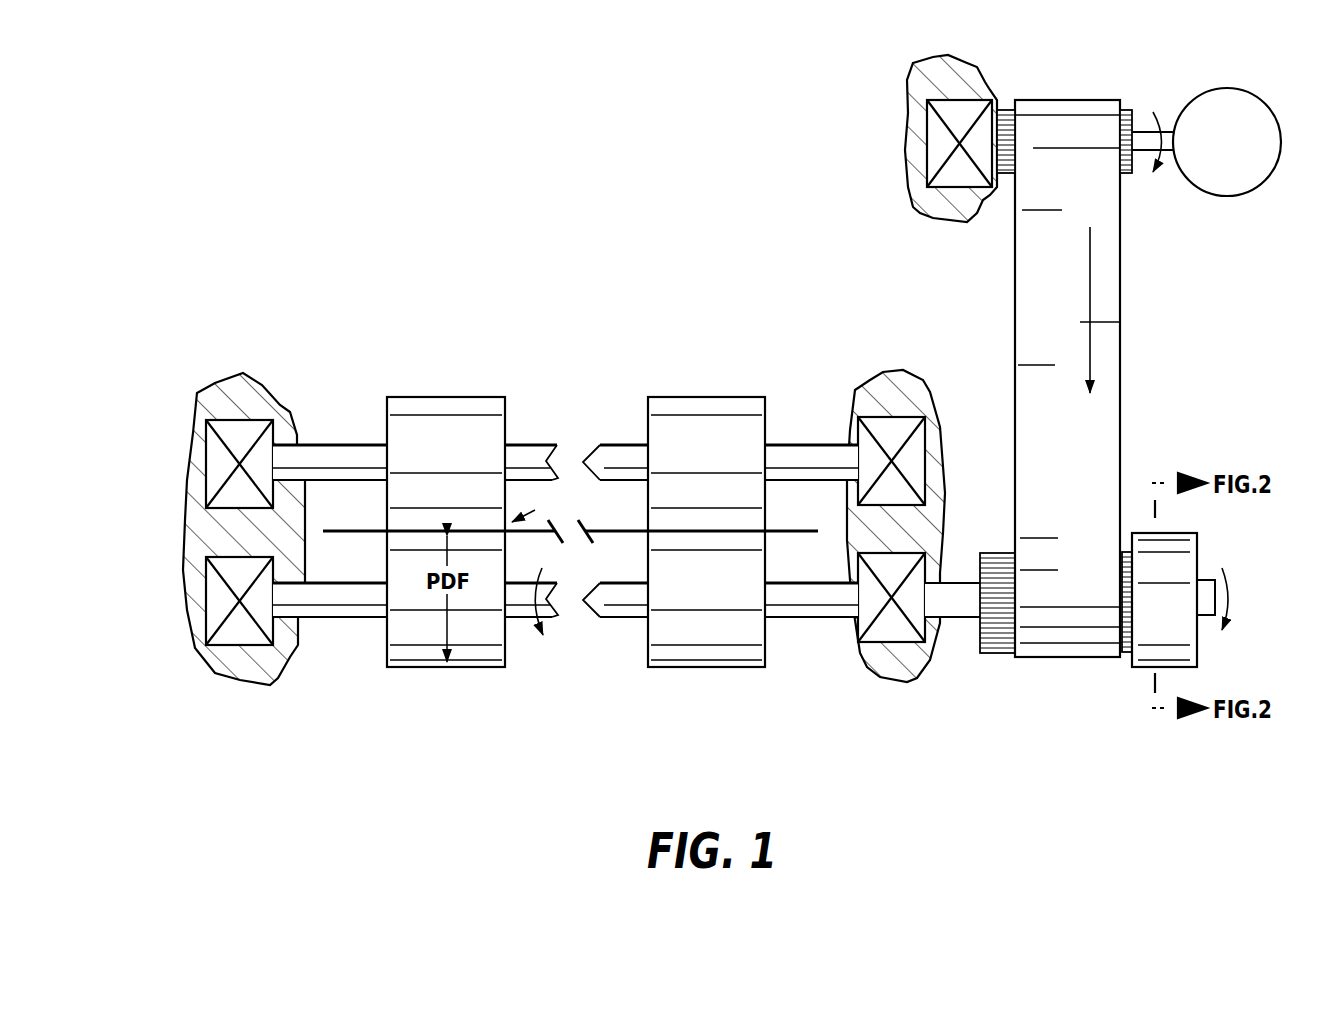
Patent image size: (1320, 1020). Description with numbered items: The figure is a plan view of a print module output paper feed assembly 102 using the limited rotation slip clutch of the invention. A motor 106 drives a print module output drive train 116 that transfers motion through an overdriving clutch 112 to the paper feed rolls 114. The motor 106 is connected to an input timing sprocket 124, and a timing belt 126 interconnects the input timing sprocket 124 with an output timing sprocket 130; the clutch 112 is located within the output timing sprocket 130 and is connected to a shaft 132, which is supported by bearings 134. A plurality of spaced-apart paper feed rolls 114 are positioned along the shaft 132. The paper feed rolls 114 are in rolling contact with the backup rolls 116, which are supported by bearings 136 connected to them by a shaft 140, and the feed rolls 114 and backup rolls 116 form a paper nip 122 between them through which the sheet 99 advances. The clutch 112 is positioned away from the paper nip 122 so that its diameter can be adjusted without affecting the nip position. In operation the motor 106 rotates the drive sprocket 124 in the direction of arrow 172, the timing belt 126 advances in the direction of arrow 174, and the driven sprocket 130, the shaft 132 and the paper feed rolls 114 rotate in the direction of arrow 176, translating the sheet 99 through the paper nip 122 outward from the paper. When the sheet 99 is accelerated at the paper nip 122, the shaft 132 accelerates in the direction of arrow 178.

The sheet 99 is at (340, 530).
The print module output paper feed assembly 102 is at (370, 650).
The motor 106 is at (1235, 183).
The clutch 112 is at (1134, 503).
The paper feed rolls 114 is at (503, 663).
The print module output drive train 116 is at (1002, 674).
The paper nip 122 is at (543, 502).
The input timing sprocket 124 is at (1010, 167).
The timing belt 126 is at (1122, 335).
The output timing sprocket 130 is at (1123, 645).
The shaft 132 is at (608, 608).
The bearings 134 is at (863, 623).
The bearings 136 is at (913, 458).
The shaft 140 is at (798, 453).
The arrow 172 is at (1160, 160).
The arrow 174 is at (1090, 295).
The arrow 176 is at (1227, 570).
The arrow 178 is at (548, 596).